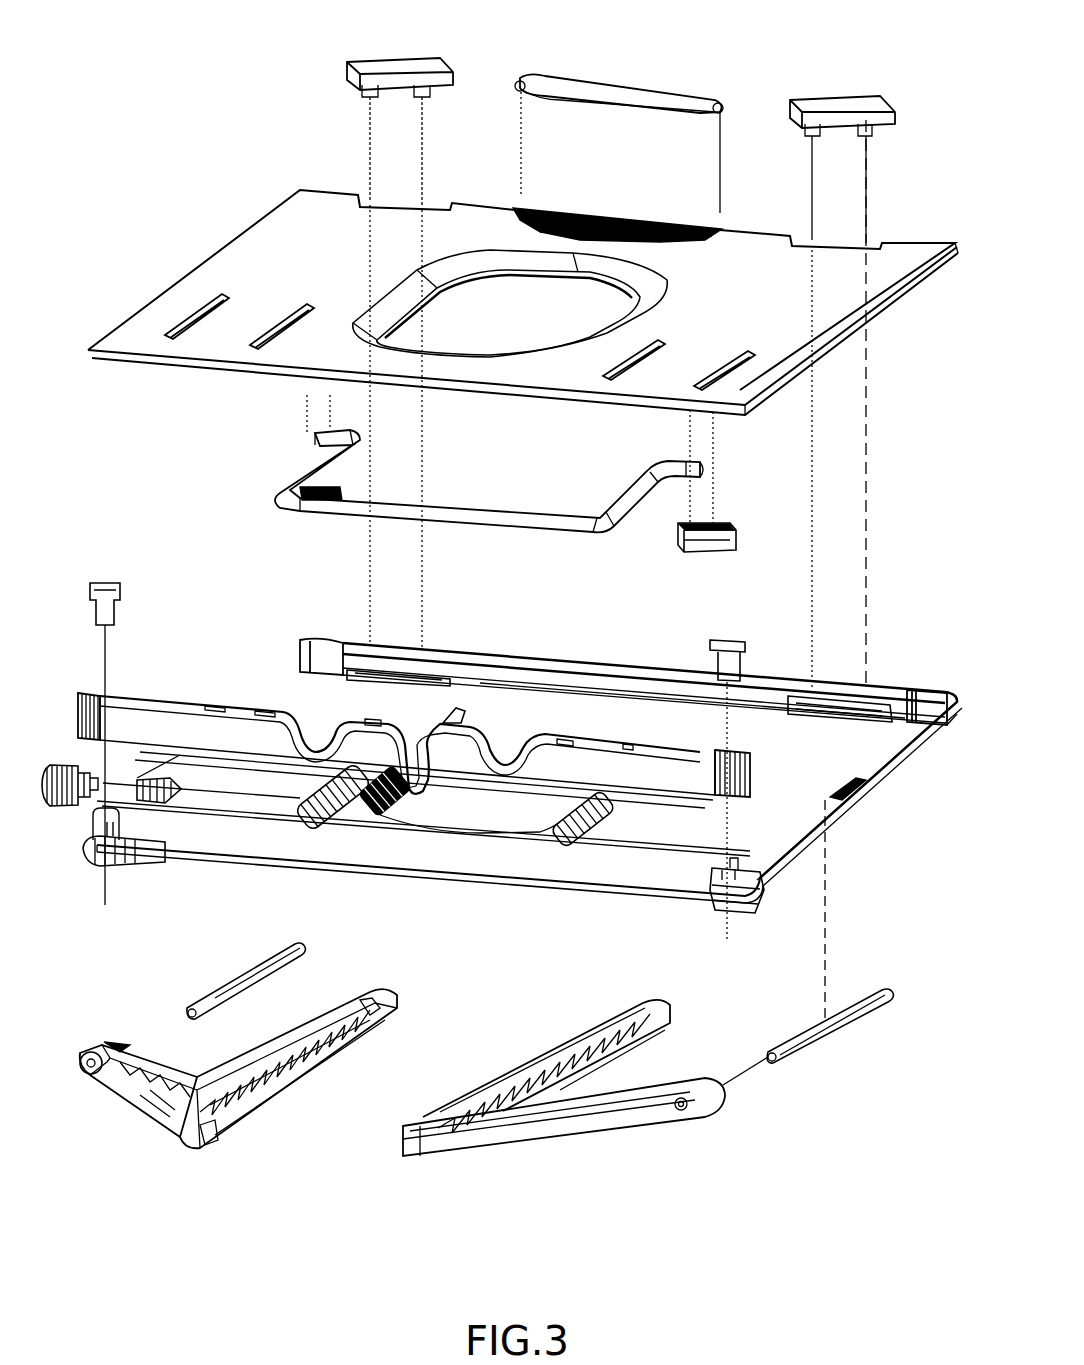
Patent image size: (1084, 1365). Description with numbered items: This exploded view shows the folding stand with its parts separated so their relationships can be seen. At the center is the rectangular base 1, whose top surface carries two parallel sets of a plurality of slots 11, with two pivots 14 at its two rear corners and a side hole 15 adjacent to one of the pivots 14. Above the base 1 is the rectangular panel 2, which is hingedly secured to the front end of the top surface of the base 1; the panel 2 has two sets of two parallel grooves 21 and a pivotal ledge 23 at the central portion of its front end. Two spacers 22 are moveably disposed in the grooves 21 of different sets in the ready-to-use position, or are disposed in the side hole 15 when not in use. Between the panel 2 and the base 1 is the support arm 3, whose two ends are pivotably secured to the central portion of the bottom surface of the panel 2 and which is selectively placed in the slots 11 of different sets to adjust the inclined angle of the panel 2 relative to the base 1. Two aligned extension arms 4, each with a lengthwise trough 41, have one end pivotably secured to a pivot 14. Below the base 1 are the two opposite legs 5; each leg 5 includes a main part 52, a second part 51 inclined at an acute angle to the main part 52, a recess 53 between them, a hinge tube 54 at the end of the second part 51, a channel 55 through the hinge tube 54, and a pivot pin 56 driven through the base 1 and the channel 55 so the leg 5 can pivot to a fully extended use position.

The base 1 is at (285, 690).
The panel 2 is at (235, 255).
The support arm 3 is at (490, 522).
The extension arm 4 is at (173, 730).
The leg 5 is at (155, 1140).
The slots 11 is at (350, 805).
The pivot 14 is at (735, 905).
The side hole 15 is at (157, 808).
The grooves 21 is at (185, 306).
The spacers 22 is at (53, 808).
The pivotal ledge 23 is at (608, 95).
The lengthwise trough 41 is at (230, 705).
The second part 51 is at (128, 1090).
The main part 52 is at (303, 1065).
The recess 53 is at (262, 1020).
The hinge tube 54 is at (110, 1040).
The channel 55 is at (85, 1050).
The pivot pin 56 is at (240, 975).